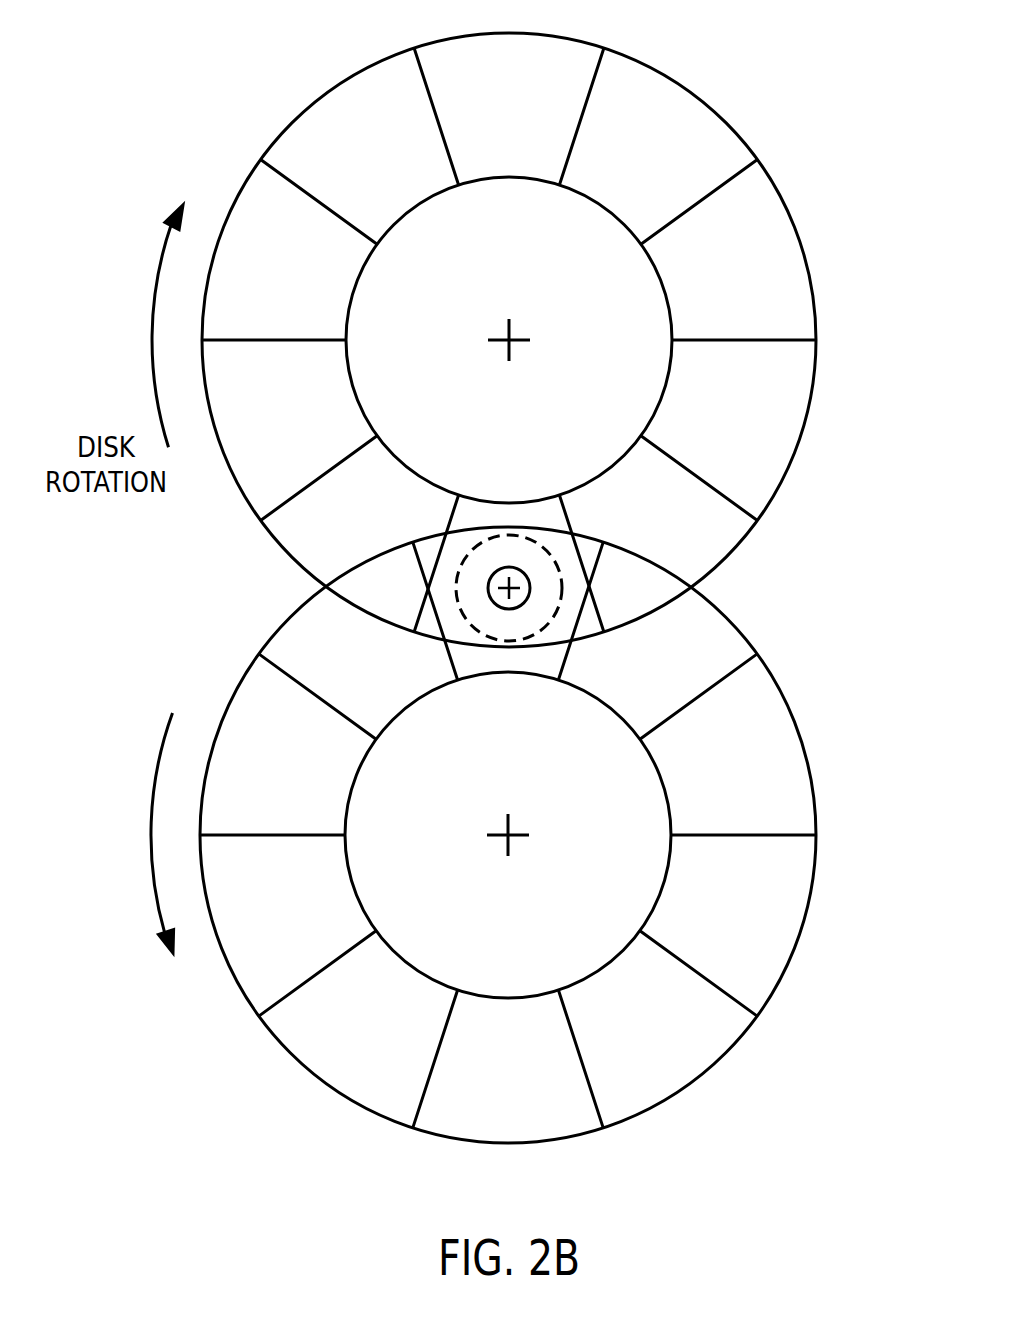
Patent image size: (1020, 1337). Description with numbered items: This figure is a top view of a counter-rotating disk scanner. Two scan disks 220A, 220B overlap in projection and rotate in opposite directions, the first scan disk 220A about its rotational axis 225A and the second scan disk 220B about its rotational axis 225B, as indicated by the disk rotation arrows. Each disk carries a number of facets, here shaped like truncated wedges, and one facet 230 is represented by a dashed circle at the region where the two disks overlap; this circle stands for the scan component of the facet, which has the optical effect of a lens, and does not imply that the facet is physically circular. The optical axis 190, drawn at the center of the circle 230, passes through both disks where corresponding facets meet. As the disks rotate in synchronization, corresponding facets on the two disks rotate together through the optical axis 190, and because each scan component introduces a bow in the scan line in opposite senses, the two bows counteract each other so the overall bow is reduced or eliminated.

The scan disk 220A is at (792, 218).
The rotational axis 225A is at (518, 338).
The scan disk 220B is at (782, 974).
The rotational axis 225B is at (518, 830).
The facet 230 is at (552, 563).
The optical axis 190 is at (552, 610).